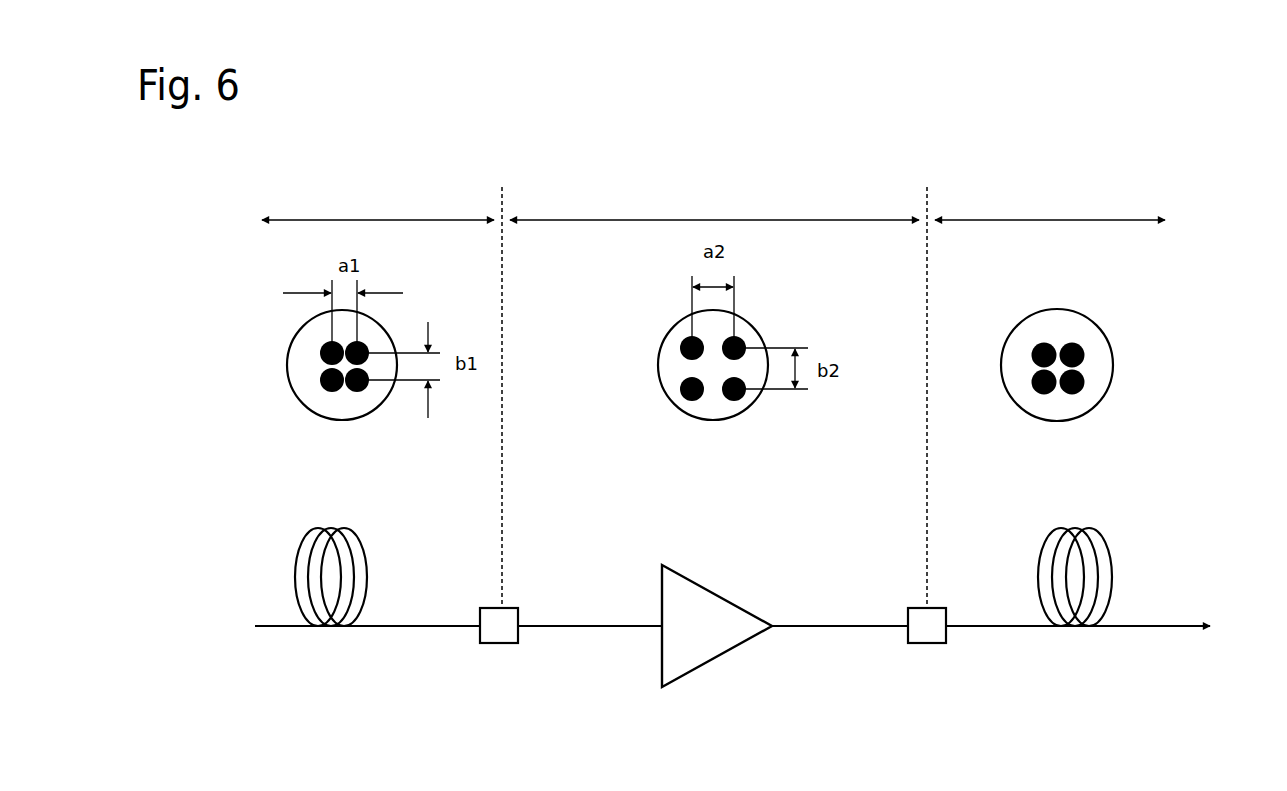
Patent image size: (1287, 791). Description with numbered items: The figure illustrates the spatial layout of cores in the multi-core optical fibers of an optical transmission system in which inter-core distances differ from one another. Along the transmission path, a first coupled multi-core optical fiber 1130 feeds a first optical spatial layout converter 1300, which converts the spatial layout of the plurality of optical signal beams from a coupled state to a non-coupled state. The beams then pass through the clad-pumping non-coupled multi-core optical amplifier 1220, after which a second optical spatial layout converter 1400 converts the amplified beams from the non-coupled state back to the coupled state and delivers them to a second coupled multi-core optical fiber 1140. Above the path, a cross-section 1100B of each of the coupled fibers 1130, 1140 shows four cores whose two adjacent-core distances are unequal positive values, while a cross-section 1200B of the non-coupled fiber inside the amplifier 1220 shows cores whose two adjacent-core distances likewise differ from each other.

The cross-section 1100B is at (298, 402).
The cross-section 1200B is at (668, 400).
The first coupled multi-core optical fiber 1130 is at (350, 528).
The second coupled multi-core optical fiber 1140 is at (1090, 528).
The clad-pumping non-coupled multi-core optical amplifier 1220 is at (712, 587).
The first optical spatial layout converter 1300 is at (492, 645).
The second optical spatial layout converter 1400 is at (920, 645).